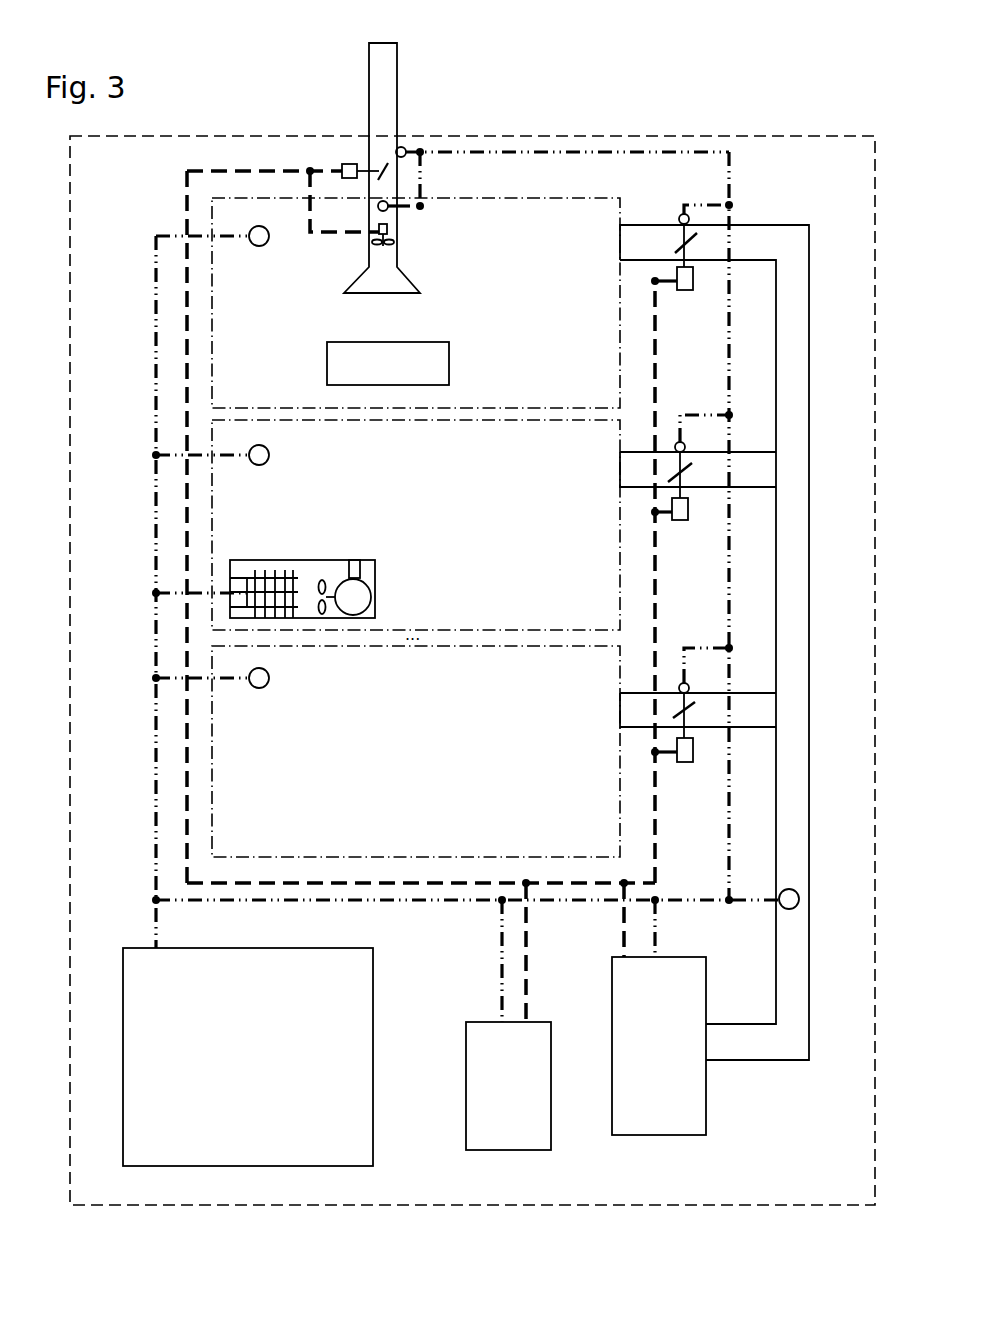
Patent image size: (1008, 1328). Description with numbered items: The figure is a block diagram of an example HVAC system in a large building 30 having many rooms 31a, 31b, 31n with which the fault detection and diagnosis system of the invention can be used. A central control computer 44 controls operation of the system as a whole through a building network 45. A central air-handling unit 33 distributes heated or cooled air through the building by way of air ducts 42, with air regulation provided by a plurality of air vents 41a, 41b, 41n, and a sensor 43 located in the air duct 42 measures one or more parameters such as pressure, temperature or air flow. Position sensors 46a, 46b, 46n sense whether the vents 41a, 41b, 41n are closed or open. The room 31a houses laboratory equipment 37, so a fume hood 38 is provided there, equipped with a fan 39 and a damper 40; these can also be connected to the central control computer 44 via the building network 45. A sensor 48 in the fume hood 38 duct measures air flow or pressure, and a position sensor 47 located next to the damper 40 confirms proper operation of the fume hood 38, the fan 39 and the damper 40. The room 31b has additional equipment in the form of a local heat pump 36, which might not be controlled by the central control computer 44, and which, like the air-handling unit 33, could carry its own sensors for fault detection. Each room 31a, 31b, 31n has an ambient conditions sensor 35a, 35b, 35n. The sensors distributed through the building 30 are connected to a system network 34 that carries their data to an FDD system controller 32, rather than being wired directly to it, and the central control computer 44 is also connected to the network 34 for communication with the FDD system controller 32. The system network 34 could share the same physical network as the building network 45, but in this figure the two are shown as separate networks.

The large building 30 is at (762, 138).
The room 31a is at (603, 238).
The room 31b is at (603, 462).
The room 31n is at (603, 686).
The FDD system controller 32 is at (357, 1023).
The central air-handling unit 33 is at (693, 1013).
The system network 34 is at (155, 830).
The ambient conditions sensor 35a is at (260, 246).
The ambient conditions sensor 35b is at (265, 463).
The ambient conditions sensor 35n is at (262, 688).
The local heat pump 36 is at (375, 580).
The laboratory equipment 37 is at (449, 363).
The fume hood 38 is at (415, 283).
The fan 39 is at (390, 238).
The damper 40 is at (380, 167).
The air vent 41a is at (688, 290).
The air vent 41b is at (683, 520).
The air vent 41n is at (689, 762).
The air duct 42 is at (800, 828).
The duct sensor 43 is at (780, 907).
The central control computer 44 is at (478, 1087).
The building network 45 is at (467, 884).
The position sensor 46a is at (682, 214).
The position sensor 46b is at (681, 442).
The position sensor 46n is at (687, 683).
The position sensor 47 is at (404, 147).
The fume hood duct sensor 48 is at (387, 203).